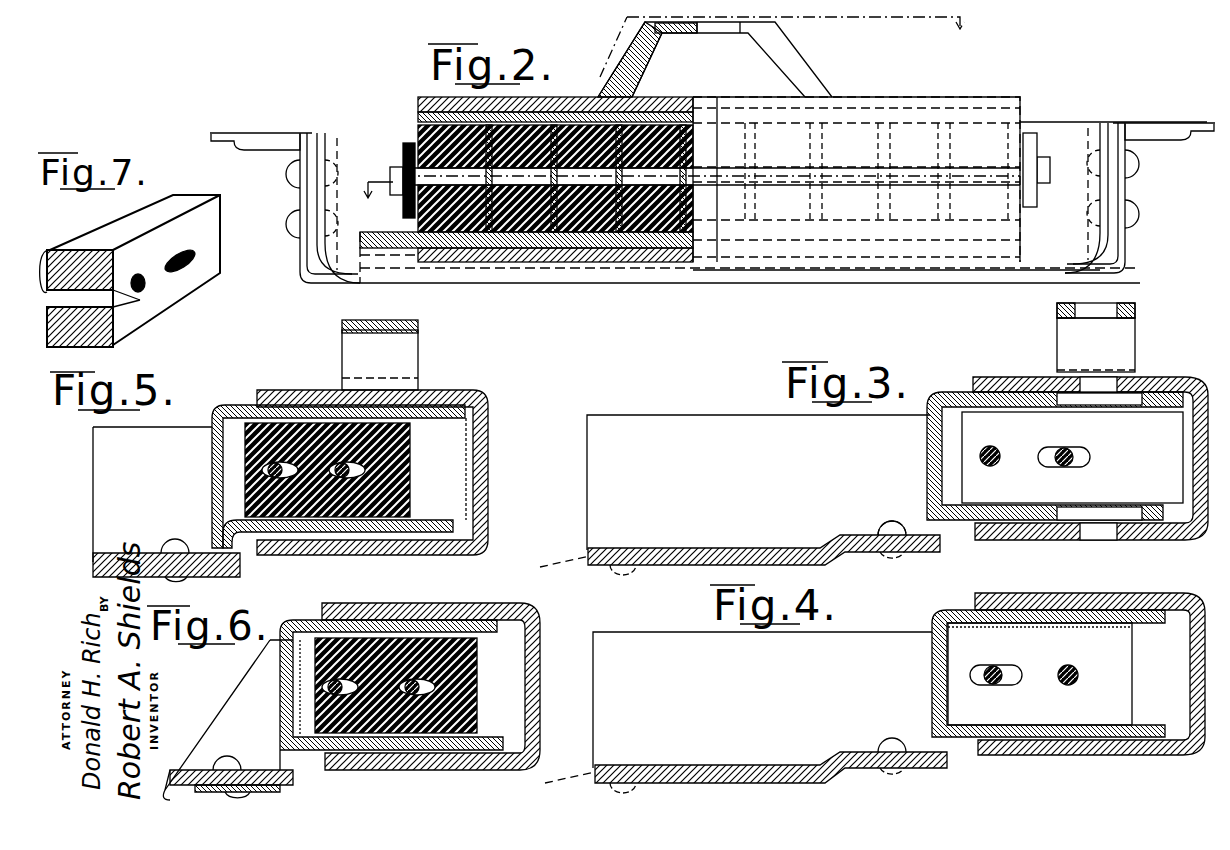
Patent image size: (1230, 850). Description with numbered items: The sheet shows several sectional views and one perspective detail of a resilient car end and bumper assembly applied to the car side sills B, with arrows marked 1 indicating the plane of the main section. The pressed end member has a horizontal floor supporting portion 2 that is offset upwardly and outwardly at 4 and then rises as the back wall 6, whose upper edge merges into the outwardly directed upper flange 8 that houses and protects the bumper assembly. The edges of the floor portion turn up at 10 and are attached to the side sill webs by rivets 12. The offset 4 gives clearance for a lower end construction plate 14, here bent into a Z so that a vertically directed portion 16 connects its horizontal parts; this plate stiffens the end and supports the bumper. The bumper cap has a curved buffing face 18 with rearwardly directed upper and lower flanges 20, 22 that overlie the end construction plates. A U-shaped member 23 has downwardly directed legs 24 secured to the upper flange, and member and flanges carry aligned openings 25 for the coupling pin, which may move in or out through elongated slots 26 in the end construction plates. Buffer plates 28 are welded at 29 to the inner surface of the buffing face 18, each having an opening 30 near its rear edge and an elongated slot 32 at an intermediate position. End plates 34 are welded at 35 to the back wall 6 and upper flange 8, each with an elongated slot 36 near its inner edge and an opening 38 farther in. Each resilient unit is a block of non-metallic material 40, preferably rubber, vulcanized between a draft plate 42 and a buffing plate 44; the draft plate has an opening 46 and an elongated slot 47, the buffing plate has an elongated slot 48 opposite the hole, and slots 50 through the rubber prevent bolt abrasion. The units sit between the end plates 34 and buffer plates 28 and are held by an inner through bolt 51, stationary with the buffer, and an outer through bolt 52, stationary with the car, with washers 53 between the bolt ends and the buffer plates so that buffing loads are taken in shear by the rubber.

In FIG. 2, the container assembly 1 is at (664, 118).
In FIG. 5, the horizontal floor supporting portion 2 is at (93, 566).
In FIG. 3, the horizontal floor supporting portion 2 is at (745, 548).
In FIG. 4, the horizontal floor supporting portion 2 is at (755, 765).
In FIG. 6, the horizontal floor supporting portion 2 is at (228, 788).
In FIG. 5, the upwardly offset portion 4 is at (140, 553).
In FIG. 3, the upwardly offset portion 4 is at (840, 537).
In FIG. 4, the upwardly offset portion 4 is at (860, 752).
In FIG. 6, the upwardly offset portion 4 is at (200, 768).
In FIG. 2, the back wall 6 is at (350, 275).
In FIG. 5, the back wall 6 is at (212, 446).
In FIG. 3, the back wall 6 is at (927, 482).
In FIG. 4, the back wall 6 is at (932, 696).
In FIG. 2, the upper flange 8 is at (418, 125).
In FIG. 5, the upper flange 8 is at (242, 405).
In FIG. 3, the upper flange 8 is at (955, 392).
In FIG. 4, the upper flange 8 is at (960, 610).
In FIG. 6, the upper flange 8 is at (305, 620).
In FIG. 2, the upwardly directed edge portion 10 is at (330, 150).
In FIG. 5, the upwardly directed edge portion 10 is at (93, 490).
In FIG. 3, the upwardly directed edge portion 10 is at (718, 415).
In FIG. 4, the upwardly directed edge portion 10 is at (688, 632).
In FIG. 6, the upwardly directed edge portion 10 is at (215, 709).
In FIG. 2, the rivets 12 is at (298, 203).
In FIG. 2, the lower end construction plate 14 is at (392, 231).
In FIG. 5, the lower end construction plate 14 is at (465, 522).
In FIG. 3, the lower end construction plate 14 is at (1022, 506).
In FIG. 4, the lower end construction plate 14 is at (970, 740).
In FIG. 6, the lower end construction plate 14 is at (480, 722).
In FIG. 2, the vertically directed portion 16 is at (415, 268).
In FIG. 5, the vertically directed portion 16 is at (245, 548).
In FIG. 3, the vertically directed portion 16 is at (958, 540).
In FIG. 4, the vertically directed portion 16 is at (950, 768).
In FIG. 6, the vertically directed portion 16 is at (310, 770).
In FIG. 2, the curved buffing face 18 is at (972, 145).
In FIG. 5, the curved buffing face 18 is at (488, 483).
In FIG. 3, the curved buffing face 18 is at (1200, 483).
In FIG. 4, the curved buffing face 18 is at (1200, 672).
In FIG. 6, the curved buffing face 18 is at (540, 675).
In FIG. 2, the upper flange of bumper 20 is at (437, 108).
In FIG. 5, the upper flange of bumper 20 is at (298, 392).
In FIG. 3, the upper flange of bumper 20 is at (1180, 570).
In FIG. 4, the upper flange of bumper 20 is at (1185, 593).
In FIG. 6, the upper flange of bumper 20 is at (458, 603).
In FIG. 2, the lower flange of bumper 22 is at (524, 262).
In FIG. 5, the lower flange of bumper 22 is at (388, 548).
In FIG. 4, the lower flange of bumper 22 is at (1168, 755).
In FIG. 6, the lower flange of bumper 22 is at (450, 770).
In FIG. 2, the U-shaped member 23 is at (752, 33).
In FIG. 5, the U-shaped member 23 is at (342, 329).
In FIG. 3, the U-shaped member 23 is at (1135, 309).
In FIG. 2, the downwardly directed legs 24 is at (640, 67).
In FIG. 5, the downwardly directed legs 24 is at (418, 352).
In FIG. 3, the downwardly directed legs 24 is at (1135, 344).
In FIG. 4, the downwardly directed legs 24 is at (1183, 593).
In FIG. 3, the aligned openings 25 is at (1098, 395).
In FIG. 3, the elongated slots 26 is at (1115, 405).
In FIG. 2, the buffer plates 28 is at (380, 125).
In FIG. 5, the buffer plates 28 is at (455, 443).
In FIG. 3, the buffer plates 28 is at (1072, 457).
In FIG. 5, the weld 29 is at (449, 469).
In FIG. 3, the weld 29 is at (1193, 452).
In FIG. 3, the opening 30 is at (992, 464).
In FIG. 3, the elongated slot 32 is at (1062, 446).
In FIG. 2, the end plates 34 is at (486, 262).
In FIG. 4, the end plates 34 is at (1040, 674).
In FIG. 6, the end plates 34 is at (300, 656).
In FIG. 4, the weld 35 is at (995, 628).
In FIG. 6, the weld 35 is at (293, 721).
In FIG. 4, the elongated slot 36 is at (1005, 668).
In FIG. 6, the elongated slot 36 is at (322, 688).
In FIG. 4, the opening 38 is at (1072, 666).
In FIG. 2, the block of non-metallic material 40 is at (532, 125).
In FIG. 7, the block of non-metallic material 40 is at (135, 270).
In FIG. 5, the block of non-metallic material 40 is at (410, 433).
In FIG. 6, the block of non-metallic material 40 is at (477, 647).
In FIG. 2, the draft plate 42 is at (557, 125).
In FIG. 7, the draft plate 42 is at (204, 223).
In FIG. 2, the buffing plate 44 is at (492, 125).
In FIG. 7, the buffing plate 44 is at (75, 248).
In FIG. 7, the opening 46 is at (142, 275).
In FIG. 7, the elongated slot 47 is at (170, 262).
In FIG. 7, the elongated slot 48 is at (52, 255).
In FIG. 7, the slots 50 is at (168, 272).
In FIG. 5, the slots 50 is at (263, 470).
In FIG. 6, the slots 50 is at (322, 692).
In FIG. 5, the inner through bolt 51 is at (262, 474).
In FIG. 3, the inner through bolt 51 is at (994, 435).
In FIG. 4, the inner through bolt 51 is at (993, 685).
In FIG. 6, the inner through bolt 51 is at (322, 685).
In FIG. 2, the outer through bolt 52 is at (705, 173).
In FIG. 5, the outer through bolt 52 is at (360, 474).
In FIG. 3, the outer through bolt 52 is at (1066, 464).
In FIG. 4, the outer through bolt 52 is at (1075, 682).
In FIG. 6, the outer through bolt 52 is at (435, 690).
In FIG. 2, the washers 53 is at (403, 152).
In FIG. 2, the car side sills B is at (306, 142).